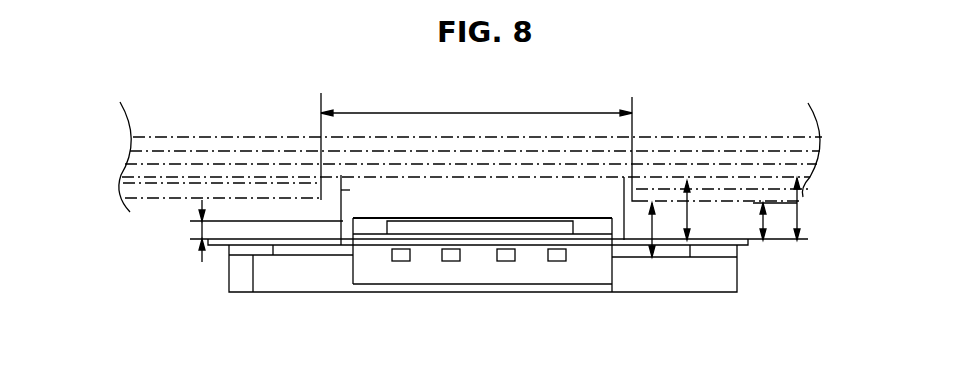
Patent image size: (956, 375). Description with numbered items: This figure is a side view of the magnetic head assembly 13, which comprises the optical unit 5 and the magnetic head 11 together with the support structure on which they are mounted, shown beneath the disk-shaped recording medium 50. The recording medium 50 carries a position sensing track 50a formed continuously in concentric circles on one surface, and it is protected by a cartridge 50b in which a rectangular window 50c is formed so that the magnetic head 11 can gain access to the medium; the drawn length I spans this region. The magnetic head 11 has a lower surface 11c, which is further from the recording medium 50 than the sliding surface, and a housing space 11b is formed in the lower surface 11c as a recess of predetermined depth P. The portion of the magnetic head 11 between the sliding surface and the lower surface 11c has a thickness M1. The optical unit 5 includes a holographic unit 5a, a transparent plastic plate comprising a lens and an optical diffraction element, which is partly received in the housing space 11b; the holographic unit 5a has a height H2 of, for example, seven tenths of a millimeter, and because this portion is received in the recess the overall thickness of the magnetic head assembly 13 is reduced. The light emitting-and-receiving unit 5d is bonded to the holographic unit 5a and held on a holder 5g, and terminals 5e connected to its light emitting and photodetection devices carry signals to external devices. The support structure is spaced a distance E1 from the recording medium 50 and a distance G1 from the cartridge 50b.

The optical unit 5 is at (315, 282).
The holographic unit 5a is at (485, 228).
The light emitting-and-receiving unit 5d is at (535, 273).
The terminals 5e is at (398, 262).
The holder 5g is at (723, 280).
The magnetic head 11 is at (341, 188).
The housing space 11b is at (598, 229).
The lower surface 11c is at (344, 243).
The magnetic head assembly 13 is at (225, 298).
The recording medium 50 is at (740, 158).
The position sensing track 50a is at (140, 182).
The cartridge 50b is at (788, 140).
The window 50c is at (632, 192).
The length dimension I is at (476, 101).
The height H2 is at (250, 231).
The depth P is at (641, 230).
The thickness M1 is at (673, 211).
The distance G1 is at (763, 222).
The distance E1 is at (785, 209).